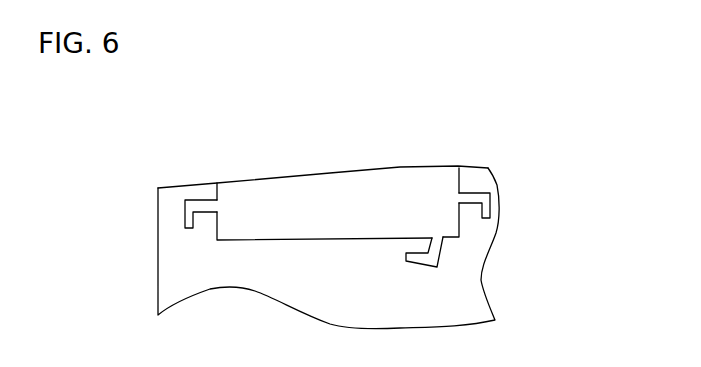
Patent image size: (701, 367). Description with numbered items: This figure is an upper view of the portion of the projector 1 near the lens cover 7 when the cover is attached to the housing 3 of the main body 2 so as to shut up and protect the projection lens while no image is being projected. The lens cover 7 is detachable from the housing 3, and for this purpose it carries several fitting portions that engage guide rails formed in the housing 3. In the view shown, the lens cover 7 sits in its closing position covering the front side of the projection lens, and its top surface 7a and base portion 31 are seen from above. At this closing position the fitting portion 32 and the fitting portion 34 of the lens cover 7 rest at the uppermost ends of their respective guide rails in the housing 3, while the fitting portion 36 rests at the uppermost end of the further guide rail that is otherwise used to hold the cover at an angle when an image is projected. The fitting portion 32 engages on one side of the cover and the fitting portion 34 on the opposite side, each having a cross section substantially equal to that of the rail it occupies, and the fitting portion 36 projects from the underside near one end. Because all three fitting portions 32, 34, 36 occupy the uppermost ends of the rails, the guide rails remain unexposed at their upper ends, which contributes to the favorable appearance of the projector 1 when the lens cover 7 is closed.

The projector 1 is at (267, 52).
The main body 2 is at (118, 278).
The housing 3 is at (485, 241).
The lens cover 7 is at (283, 162).
The panel upper surface 7a is at (330, 173).
The base plate 31 is at (377, 185).
The fitting portion 32 is at (485, 201).
The fitting portion 34 is at (185, 207).
The fitting portion 36 is at (430, 259).